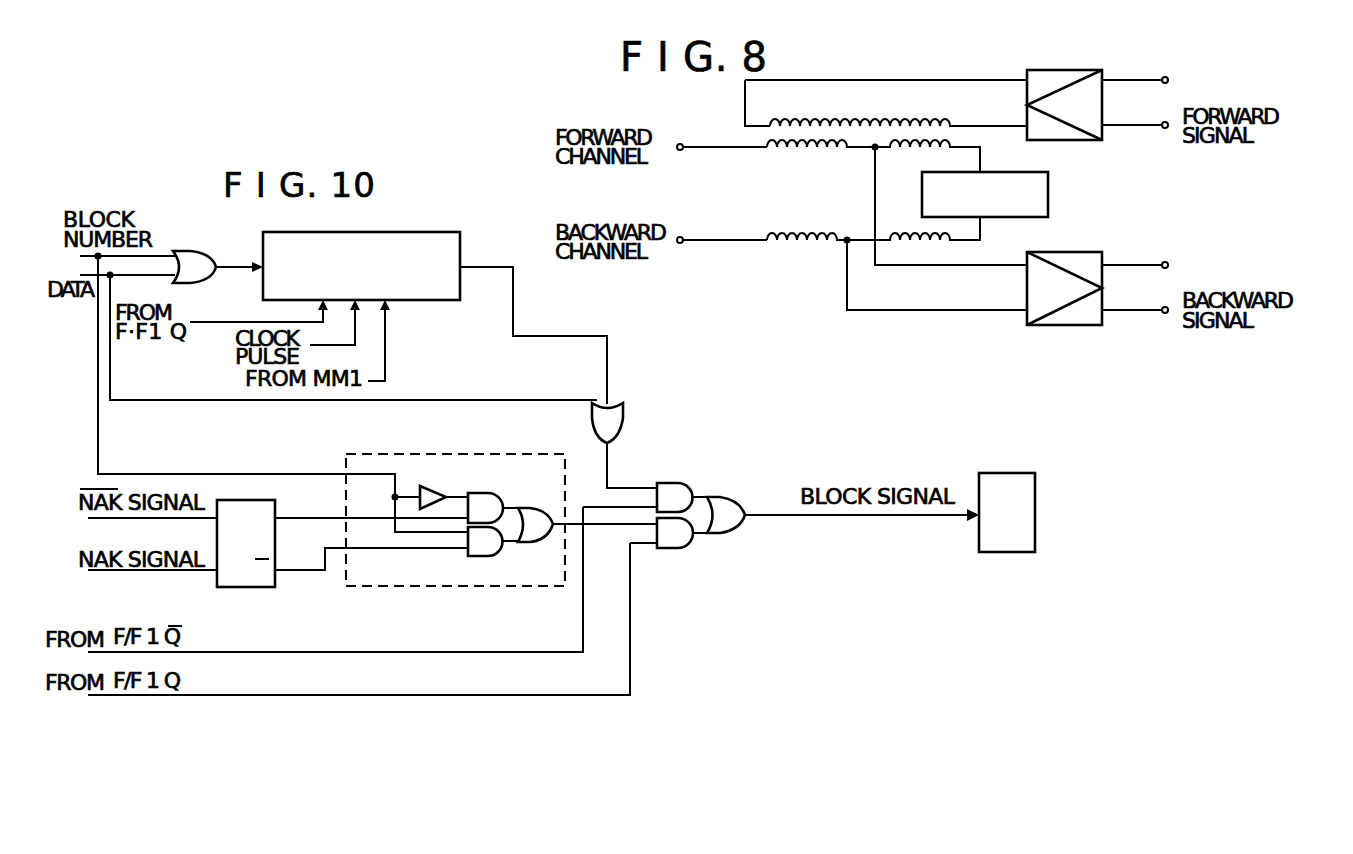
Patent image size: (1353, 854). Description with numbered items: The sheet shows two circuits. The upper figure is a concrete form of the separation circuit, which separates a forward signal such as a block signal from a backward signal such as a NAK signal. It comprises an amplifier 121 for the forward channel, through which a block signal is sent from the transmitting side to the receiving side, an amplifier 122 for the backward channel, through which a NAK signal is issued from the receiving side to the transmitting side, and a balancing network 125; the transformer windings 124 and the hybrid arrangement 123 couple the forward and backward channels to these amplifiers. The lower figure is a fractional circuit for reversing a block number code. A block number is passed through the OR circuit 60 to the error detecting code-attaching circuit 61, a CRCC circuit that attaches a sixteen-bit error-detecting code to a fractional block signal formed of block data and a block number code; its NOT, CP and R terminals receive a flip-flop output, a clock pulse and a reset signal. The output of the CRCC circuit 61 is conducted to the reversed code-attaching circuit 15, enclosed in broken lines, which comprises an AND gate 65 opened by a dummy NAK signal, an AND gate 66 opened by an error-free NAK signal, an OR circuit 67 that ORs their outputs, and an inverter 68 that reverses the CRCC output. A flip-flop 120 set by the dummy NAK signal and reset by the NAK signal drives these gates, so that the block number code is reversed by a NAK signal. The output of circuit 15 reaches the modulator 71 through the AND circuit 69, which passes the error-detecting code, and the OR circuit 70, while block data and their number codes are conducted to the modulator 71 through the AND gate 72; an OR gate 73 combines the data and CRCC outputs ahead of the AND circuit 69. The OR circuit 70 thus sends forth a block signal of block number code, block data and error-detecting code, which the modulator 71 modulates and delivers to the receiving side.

In FIG. 8, the amplifier 121 is at (1058, 70).
In FIG. 8, the amplifier 122 is at (1088, 252).
In FIG. 8, the hybrid transformer 123 is at (770, 196).
In FIG. 8, the transformer winding 124 is at (890, 102).
In FIG. 8, the balancing network 125 is at (1048, 205).
In FIG. 10, the OR circuit 60 is at (191, 256).
In FIG. 10, the error detecting code-attaching circuit 61 is at (430, 237).
In FIG. 10, the OR gate 73 is at (626, 414).
In FIG. 10, the AND circuit 69 is at (672, 490).
In FIG. 10, the AND gate 72 is at (686, 549).
In FIG. 10, the OR circuit 70 is at (747, 529).
In FIG. 10, the modulator 71 is at (1004, 478).
In FIG. 10, the inverter 68 is at (428, 498).
In FIG. 10, the AND gate 65 is at (486, 500).
In FIG. 10, the AND gate 66 is at (500, 550).
In FIG. 10, the OR circuit 67 is at (547, 542).
In FIG. 10, the reversed code-attaching circuit 15 is at (452, 586).
In FIG. 10, the NAK flip-flop 120 is at (274, 588).